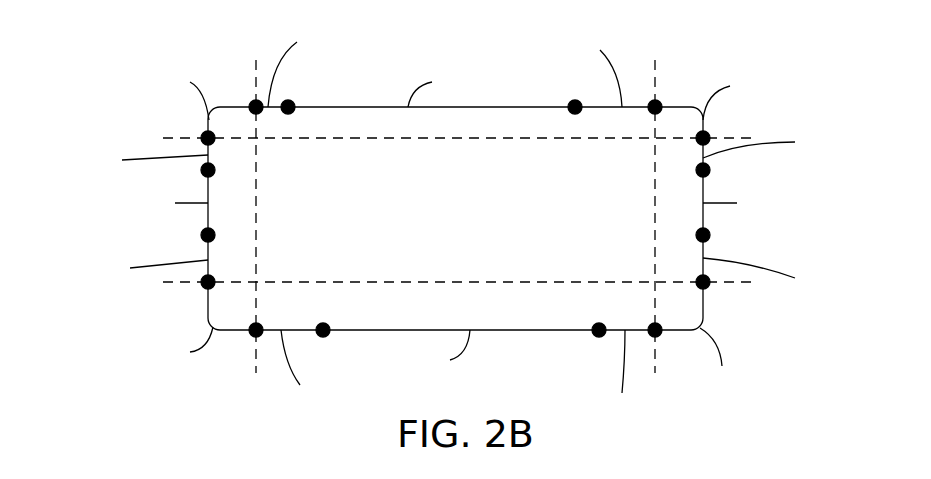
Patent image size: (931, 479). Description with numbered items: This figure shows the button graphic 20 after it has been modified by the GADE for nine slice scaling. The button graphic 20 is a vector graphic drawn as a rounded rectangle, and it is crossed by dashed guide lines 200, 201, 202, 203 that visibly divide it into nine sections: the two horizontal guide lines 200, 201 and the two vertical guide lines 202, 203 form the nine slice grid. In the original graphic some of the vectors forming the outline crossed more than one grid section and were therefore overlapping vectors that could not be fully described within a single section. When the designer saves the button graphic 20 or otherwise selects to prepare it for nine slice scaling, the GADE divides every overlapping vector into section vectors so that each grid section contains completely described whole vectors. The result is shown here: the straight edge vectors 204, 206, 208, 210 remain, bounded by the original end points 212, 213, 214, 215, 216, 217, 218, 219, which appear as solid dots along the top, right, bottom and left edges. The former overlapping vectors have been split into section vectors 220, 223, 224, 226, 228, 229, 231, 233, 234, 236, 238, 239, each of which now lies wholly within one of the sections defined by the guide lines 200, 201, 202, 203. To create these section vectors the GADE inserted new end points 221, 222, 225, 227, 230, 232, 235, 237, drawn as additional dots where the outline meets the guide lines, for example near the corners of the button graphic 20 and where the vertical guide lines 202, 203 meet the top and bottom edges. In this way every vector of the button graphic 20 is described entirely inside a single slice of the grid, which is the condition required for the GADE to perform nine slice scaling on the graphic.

The button graphic 20 is at (439, 221).
The guide line 200 is at (439, 286).
The guide line 201 is at (439, 140).
The guide line 202 is at (259, 206).
The guide line 203 is at (659, 206).
The vector 204 is at (455, 89).
The vector 206 is at (738, 218).
The vector 208 is at (455, 350).
The vector 210 is at (177, 218).
The end point 212 is at (290, 101).
The end point 213 is at (573, 101).
The end point 214 is at (710, 168).
The end point 215 is at (710, 234).
The end point 216 is at (597, 336).
The end point 217 is at (326, 336).
The end point 218 is at (202, 233).
The end point 219 is at (202, 168).
The section vector 220 is at (183, 92).
The end point 221 is at (204, 132).
The end point 222 is at (254, 101).
The section vector 223 is at (300, 67).
The section vector 224 is at (597, 71).
The end point 225 is at (659, 101).
The section vector 226 is at (734, 99).
The end point 227 is at (709, 134).
The section vector 228 is at (766, 146).
The section vector 229 is at (766, 274).
The end point 230 is at (708, 287).
The section vector 231 is at (720, 356).
The end point 232 is at (659, 336).
The section vector 233 is at (621, 372).
The section vector 234 is at (306, 366).
The end point 235 is at (252, 336).
The section vector 236 is at (184, 344).
The end point 237 is at (204, 288).
The section vector 238 is at (151, 264).
The section vector 239 is at (146, 159).